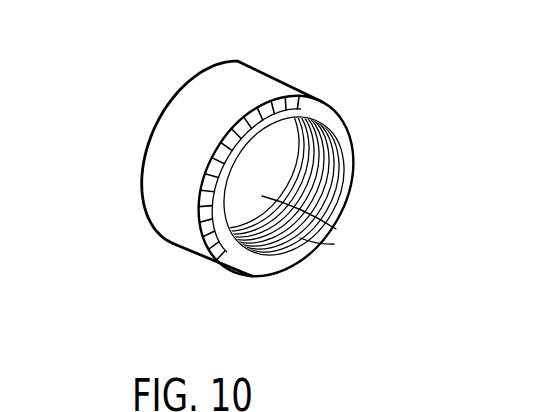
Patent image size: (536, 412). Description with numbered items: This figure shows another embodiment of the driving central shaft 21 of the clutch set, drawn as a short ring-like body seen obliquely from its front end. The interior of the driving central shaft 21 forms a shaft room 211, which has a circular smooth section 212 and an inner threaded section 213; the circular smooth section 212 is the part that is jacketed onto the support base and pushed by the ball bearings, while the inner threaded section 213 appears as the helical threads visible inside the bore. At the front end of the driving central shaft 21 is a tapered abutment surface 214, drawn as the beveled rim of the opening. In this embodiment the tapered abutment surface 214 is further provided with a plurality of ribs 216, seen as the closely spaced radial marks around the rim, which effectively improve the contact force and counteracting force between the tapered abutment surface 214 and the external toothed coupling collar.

The driving central shaft 21 is at (178, 160).
The shaft room 211 is at (318, 228).
The circular smooth section 212 is at (284, 149).
The inner threaded section 213 is at (307, 178).
The tapered abutment surface 214 is at (249, 115).
The ribs 216 is at (316, 98).